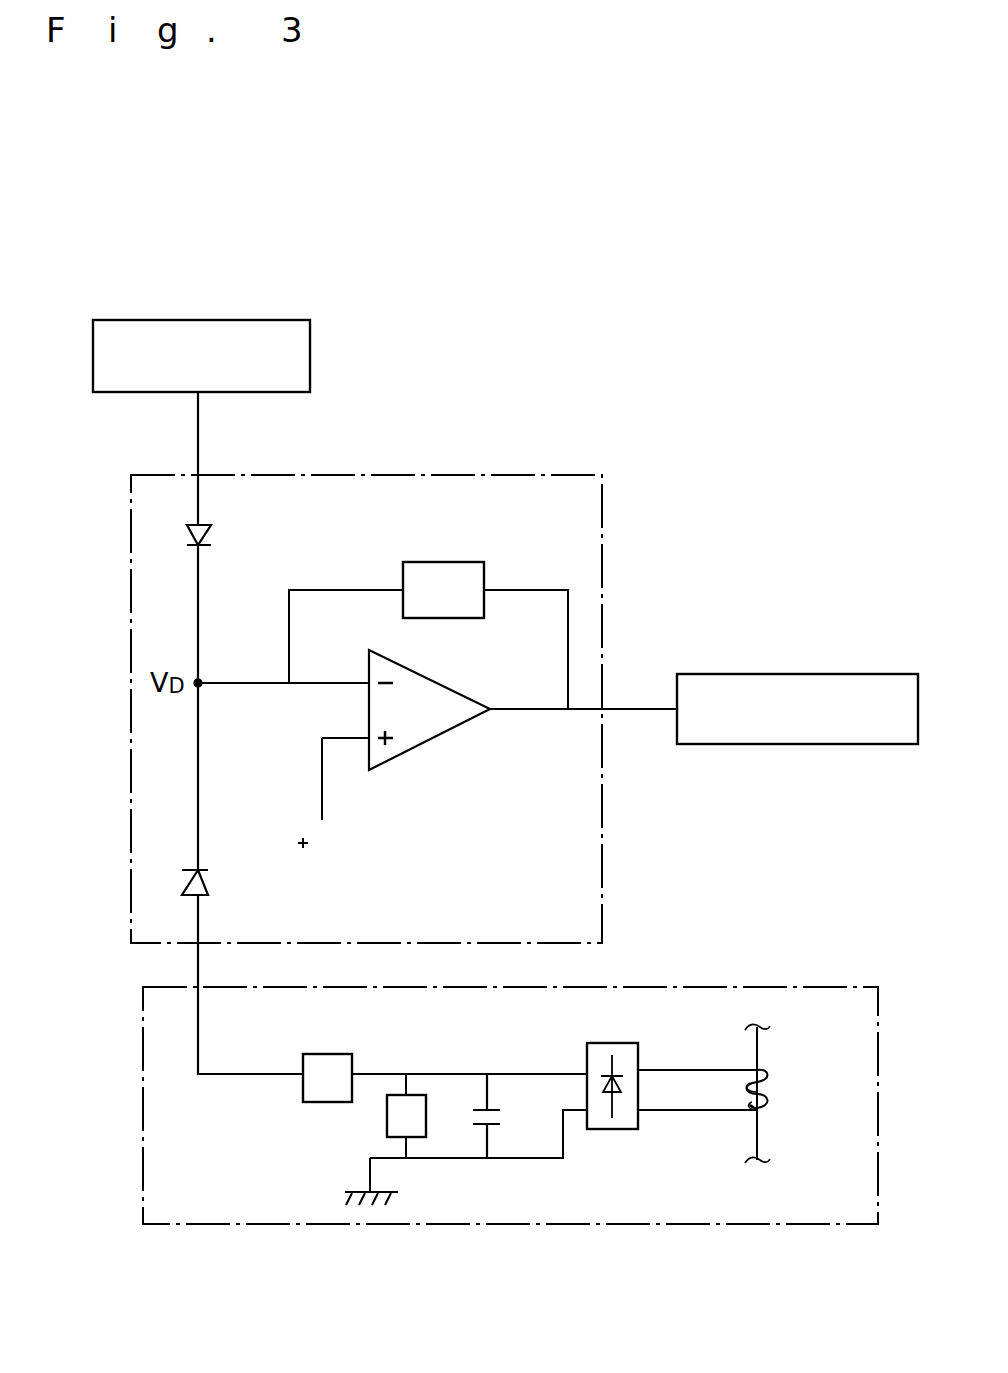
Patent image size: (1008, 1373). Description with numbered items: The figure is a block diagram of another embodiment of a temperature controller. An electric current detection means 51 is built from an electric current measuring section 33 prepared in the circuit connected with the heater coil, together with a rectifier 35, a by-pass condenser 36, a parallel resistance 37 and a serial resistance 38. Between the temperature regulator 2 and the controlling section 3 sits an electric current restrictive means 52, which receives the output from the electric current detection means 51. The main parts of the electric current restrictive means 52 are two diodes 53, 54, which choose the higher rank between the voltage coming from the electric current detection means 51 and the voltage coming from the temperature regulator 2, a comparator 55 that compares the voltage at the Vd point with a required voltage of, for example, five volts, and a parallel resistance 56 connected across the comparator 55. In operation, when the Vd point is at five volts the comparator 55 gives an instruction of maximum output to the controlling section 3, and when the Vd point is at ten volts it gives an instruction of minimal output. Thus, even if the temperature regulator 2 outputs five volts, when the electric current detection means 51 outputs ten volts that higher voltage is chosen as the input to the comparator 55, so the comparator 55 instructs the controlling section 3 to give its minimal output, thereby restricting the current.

The temperature regulator 2 is at (261, 320).
The controlling section 3 is at (851, 674).
The electric current measuring section 33 is at (770, 1098).
The rectifier 35 is at (612, 1129).
The by-pass condenser 36 is at (505, 1117).
The parallel resistance 37 is at (385, 1115).
The serial resistance 38 is at (338, 1054).
The electric current detection means 51 is at (803, 987).
The electric current restrictive means 52 is at (510, 475).
The diode 53 is at (210, 880).
The diode 54 is at (213, 537).
The comparator 55 is at (447, 732).
The parallel resistance 56 is at (462, 562).